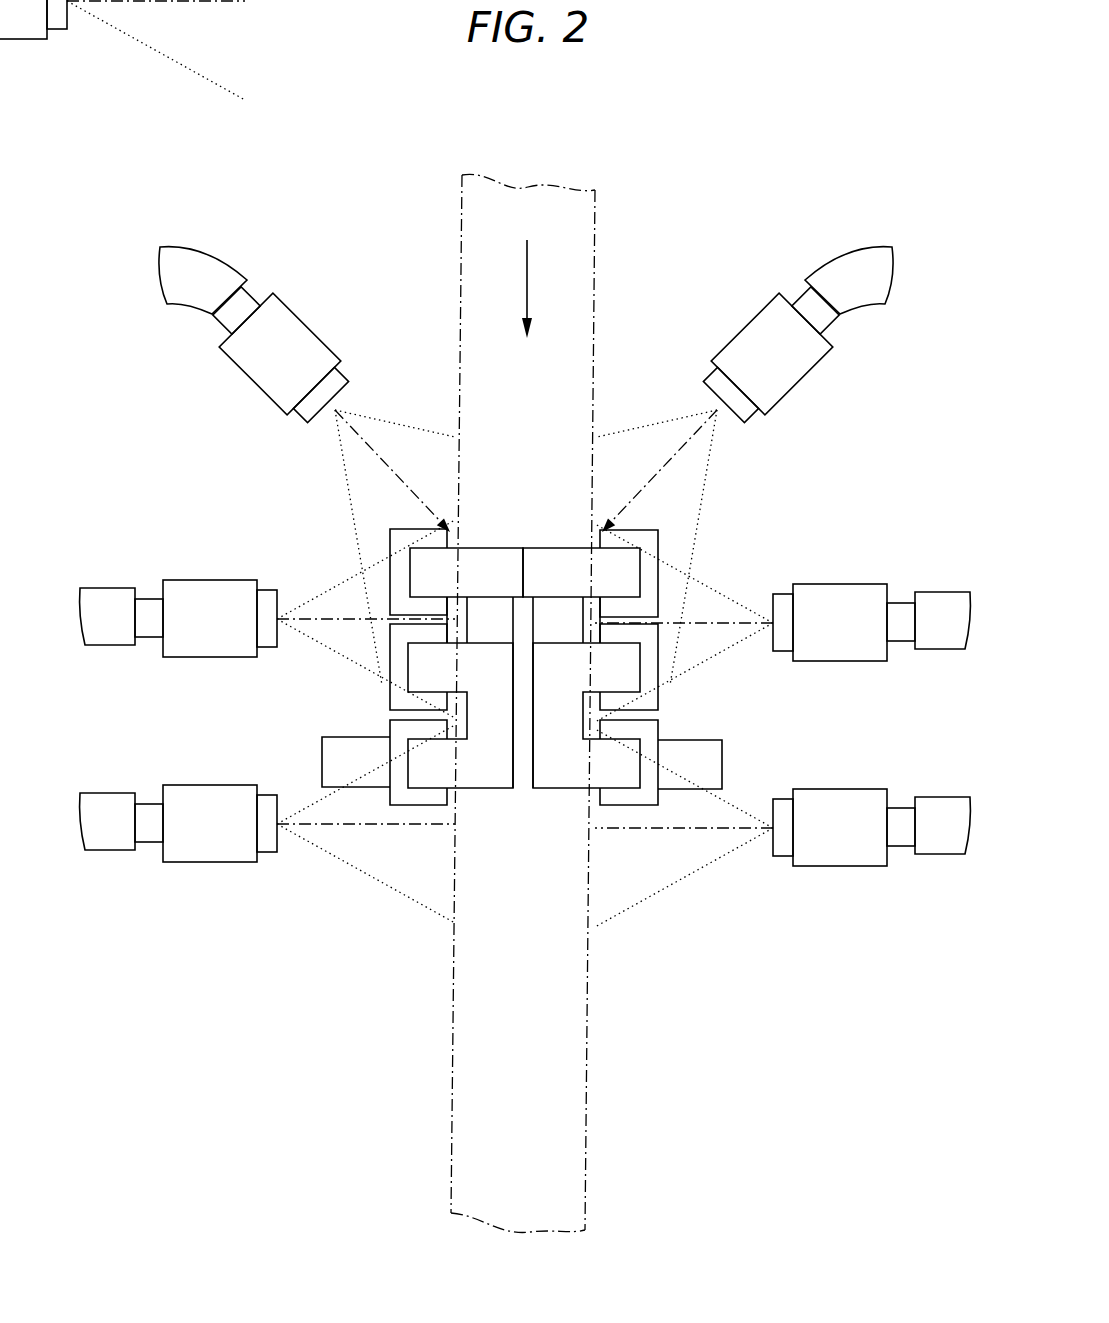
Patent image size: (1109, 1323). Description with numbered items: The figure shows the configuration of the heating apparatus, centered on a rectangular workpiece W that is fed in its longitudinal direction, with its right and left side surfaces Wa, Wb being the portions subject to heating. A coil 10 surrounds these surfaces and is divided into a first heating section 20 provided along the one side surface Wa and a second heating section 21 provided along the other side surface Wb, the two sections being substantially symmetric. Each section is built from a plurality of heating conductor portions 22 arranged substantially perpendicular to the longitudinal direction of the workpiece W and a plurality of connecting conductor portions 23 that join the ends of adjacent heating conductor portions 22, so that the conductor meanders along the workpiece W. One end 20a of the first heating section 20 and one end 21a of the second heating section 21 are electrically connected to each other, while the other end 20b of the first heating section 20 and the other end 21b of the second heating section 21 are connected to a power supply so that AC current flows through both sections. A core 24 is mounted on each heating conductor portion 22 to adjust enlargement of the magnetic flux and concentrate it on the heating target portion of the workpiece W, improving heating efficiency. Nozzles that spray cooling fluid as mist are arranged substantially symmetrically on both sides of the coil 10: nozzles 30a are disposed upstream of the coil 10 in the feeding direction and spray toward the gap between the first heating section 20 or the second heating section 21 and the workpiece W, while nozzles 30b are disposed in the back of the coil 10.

The workpiece W is at (528, 664).
The side surface Wa is at (457, 256).
The side surface Wb is at (597, 240).
The coil 10 is at (525, 644).
The first heating section 20 is at (370, 668).
The second heating section 21 is at (680, 679).
The one end of the first heating section 20a is at (508, 568).
The one end of the second heating section 21a is at (537, 568).
The other end of the first heating section 20b is at (322, 765).
The other end of the second heating section 21b is at (708, 765).
The heating conductor portions 22 is at (428, 577).
The connecting conductor portions 23 is at (448, 605).
The core 24 is at (650, 648).
The nozzles 30a is at (307, 322).
The nozzles 30b is at (183, 580).